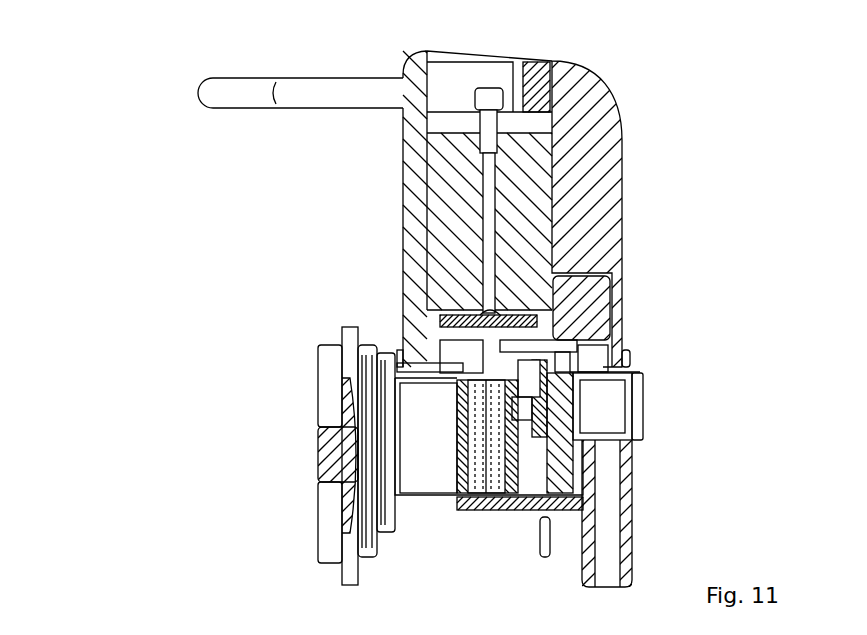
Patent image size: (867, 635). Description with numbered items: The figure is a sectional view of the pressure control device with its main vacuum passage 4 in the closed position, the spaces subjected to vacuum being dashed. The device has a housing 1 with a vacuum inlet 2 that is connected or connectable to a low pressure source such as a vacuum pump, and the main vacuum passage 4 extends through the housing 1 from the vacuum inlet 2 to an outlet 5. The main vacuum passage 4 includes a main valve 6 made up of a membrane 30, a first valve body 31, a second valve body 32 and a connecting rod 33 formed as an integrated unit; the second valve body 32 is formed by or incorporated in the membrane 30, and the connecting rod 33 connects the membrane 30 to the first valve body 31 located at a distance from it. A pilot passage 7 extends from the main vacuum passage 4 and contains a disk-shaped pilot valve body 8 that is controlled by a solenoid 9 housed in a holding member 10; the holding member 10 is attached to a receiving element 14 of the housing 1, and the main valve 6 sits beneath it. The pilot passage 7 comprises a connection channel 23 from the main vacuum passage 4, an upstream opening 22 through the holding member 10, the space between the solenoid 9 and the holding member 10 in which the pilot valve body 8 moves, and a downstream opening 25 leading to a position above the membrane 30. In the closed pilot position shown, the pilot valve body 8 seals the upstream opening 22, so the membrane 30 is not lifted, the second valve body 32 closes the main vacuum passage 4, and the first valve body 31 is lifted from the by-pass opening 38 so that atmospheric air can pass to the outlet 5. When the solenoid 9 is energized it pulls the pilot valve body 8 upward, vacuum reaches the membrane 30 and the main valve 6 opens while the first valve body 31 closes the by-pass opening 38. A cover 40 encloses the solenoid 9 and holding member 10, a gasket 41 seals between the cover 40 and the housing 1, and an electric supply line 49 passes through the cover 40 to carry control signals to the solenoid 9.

The housing 1 is at (490, 512).
The vacuum inlet 2 is at (291, 449).
The main vacuum passage 4 is at (457, 480).
The outlet 5 is at (610, 545).
The main valve 6 is at (564, 415).
The pilot passage 7 is at (400, 368).
The pilot valve body 8 is at (455, 305).
The solenoid 9 is at (530, 205).
The holding member 10 is at (597, 296).
The receiving element 14 is at (600, 357).
The upstream opening 22 is at (450, 325).
The connection channel 23 is at (455, 345).
The downstream opening 25 is at (580, 332).
The membrane 30 is at (576, 400).
The first valve body 31 is at (557, 440).
The second valve body 32 is at (590, 348).
The connecting rod 33 is at (562, 414).
The by-pass opening 38 is at (548, 425).
The cover 40 is at (598, 106).
The gasket 41 is at (397, 357).
The electric supply line 49 is at (300, 88).